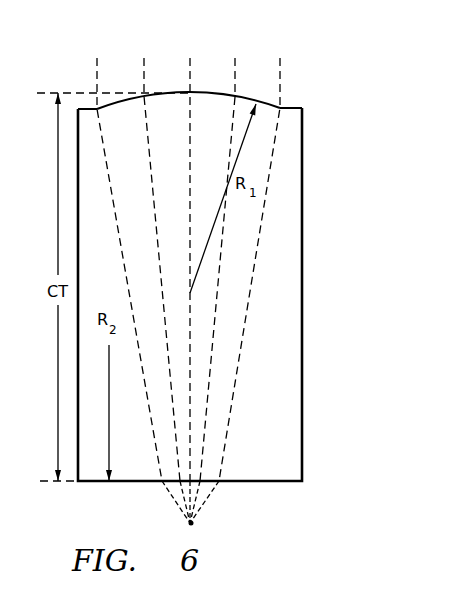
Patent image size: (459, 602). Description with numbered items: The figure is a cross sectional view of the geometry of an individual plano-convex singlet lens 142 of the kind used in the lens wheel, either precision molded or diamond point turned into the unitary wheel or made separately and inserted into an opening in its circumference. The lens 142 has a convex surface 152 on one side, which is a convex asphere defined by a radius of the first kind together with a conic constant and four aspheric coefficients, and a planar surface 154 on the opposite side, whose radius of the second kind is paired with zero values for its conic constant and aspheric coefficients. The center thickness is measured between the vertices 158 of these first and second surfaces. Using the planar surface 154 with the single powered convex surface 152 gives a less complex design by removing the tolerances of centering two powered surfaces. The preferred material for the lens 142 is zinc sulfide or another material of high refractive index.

The plano-convex singlet lens 142 is at (290, 93).
The convex surface 152 is at (125, 75).
The vertices 158 is at (200, 92).
The planar surface 154 is at (227, 517).